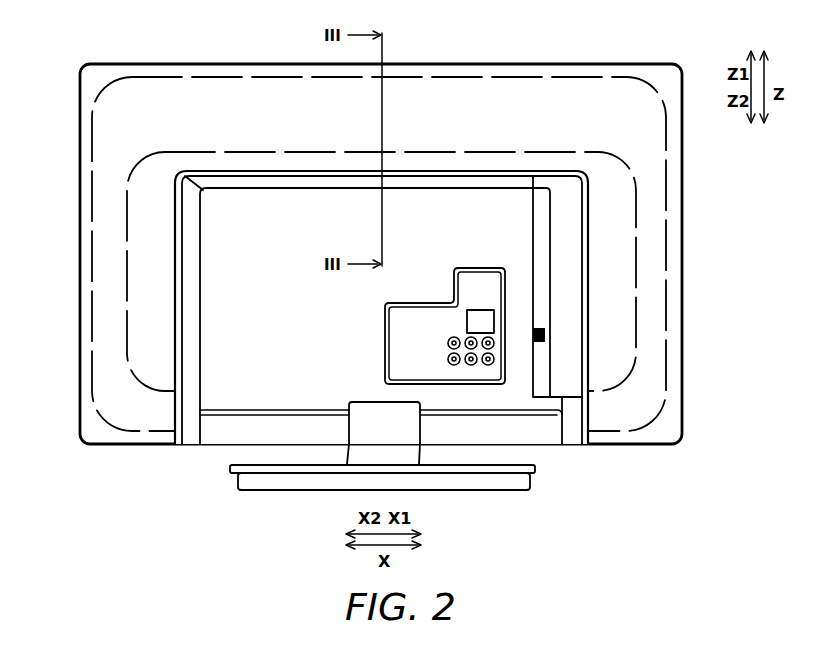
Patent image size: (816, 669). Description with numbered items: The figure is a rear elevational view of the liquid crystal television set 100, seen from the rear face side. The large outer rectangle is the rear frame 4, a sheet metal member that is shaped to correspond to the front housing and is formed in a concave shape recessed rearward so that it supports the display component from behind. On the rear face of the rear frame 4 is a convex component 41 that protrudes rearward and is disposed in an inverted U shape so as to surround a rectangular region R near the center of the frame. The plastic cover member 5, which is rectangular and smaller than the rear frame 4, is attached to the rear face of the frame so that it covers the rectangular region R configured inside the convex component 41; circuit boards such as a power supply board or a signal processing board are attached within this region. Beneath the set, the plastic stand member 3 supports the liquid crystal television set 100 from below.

The liquid crystal television set 100 is at (96, 51).
The rear frame 4 is at (582, 97).
The convex component 41 is at (588, 262).
The cover member 5 is at (451, 344).
The stand member 3 is at (510, 484).
The rectangular region R is at (576, 212).